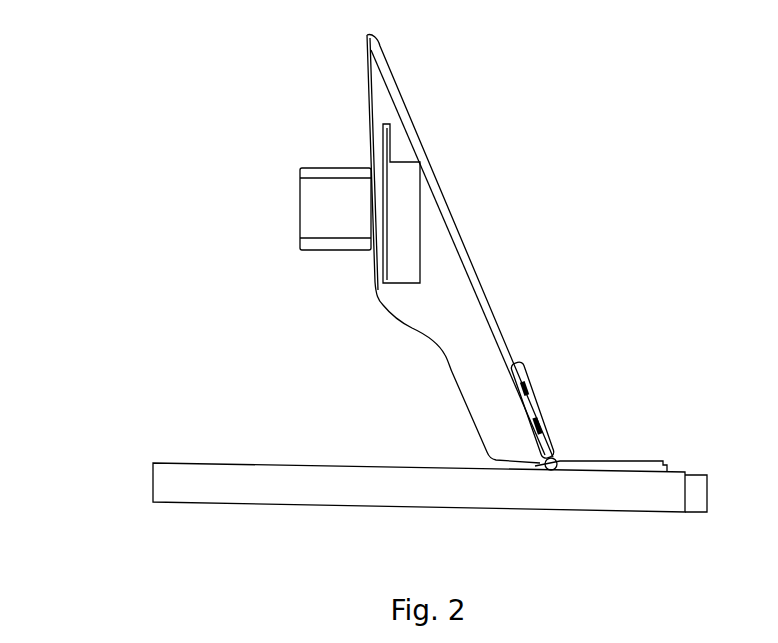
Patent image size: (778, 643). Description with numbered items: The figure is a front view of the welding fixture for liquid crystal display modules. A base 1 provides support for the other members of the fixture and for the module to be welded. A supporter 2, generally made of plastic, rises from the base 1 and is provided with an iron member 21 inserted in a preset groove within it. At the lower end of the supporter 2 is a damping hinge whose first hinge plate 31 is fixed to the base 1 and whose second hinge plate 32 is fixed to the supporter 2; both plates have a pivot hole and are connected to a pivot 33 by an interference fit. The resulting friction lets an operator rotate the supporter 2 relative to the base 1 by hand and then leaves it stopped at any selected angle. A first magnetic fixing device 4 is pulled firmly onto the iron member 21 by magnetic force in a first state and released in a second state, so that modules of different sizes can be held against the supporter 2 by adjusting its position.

The base 1 is at (247, 477).
The supporter 2 is at (450, 283).
The first magnetic fixing device 4 is at (307, 217).
The iron member 21 is at (395, 247).
The first hinge plate 31 is at (615, 462).
The second hinge plate 32 is at (540, 408).
The pivot 33 is at (557, 457).